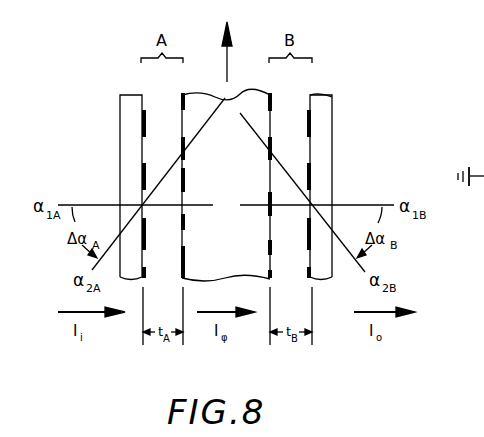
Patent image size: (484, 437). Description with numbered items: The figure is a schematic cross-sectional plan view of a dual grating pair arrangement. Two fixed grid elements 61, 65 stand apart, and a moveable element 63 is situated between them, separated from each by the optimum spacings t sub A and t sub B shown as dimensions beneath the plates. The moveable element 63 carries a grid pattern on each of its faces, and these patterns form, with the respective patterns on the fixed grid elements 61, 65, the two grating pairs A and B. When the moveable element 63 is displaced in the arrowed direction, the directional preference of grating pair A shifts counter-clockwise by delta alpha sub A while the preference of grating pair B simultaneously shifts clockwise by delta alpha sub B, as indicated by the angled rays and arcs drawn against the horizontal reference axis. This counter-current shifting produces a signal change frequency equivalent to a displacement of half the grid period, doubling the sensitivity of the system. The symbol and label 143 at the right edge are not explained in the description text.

The fixed grid element 61 is at (120, 134).
The moveable element 63 is at (226, 96).
The fixed grid element 65 is at (332, 123).
The ground / bias terminal 143 is at (471, 230).